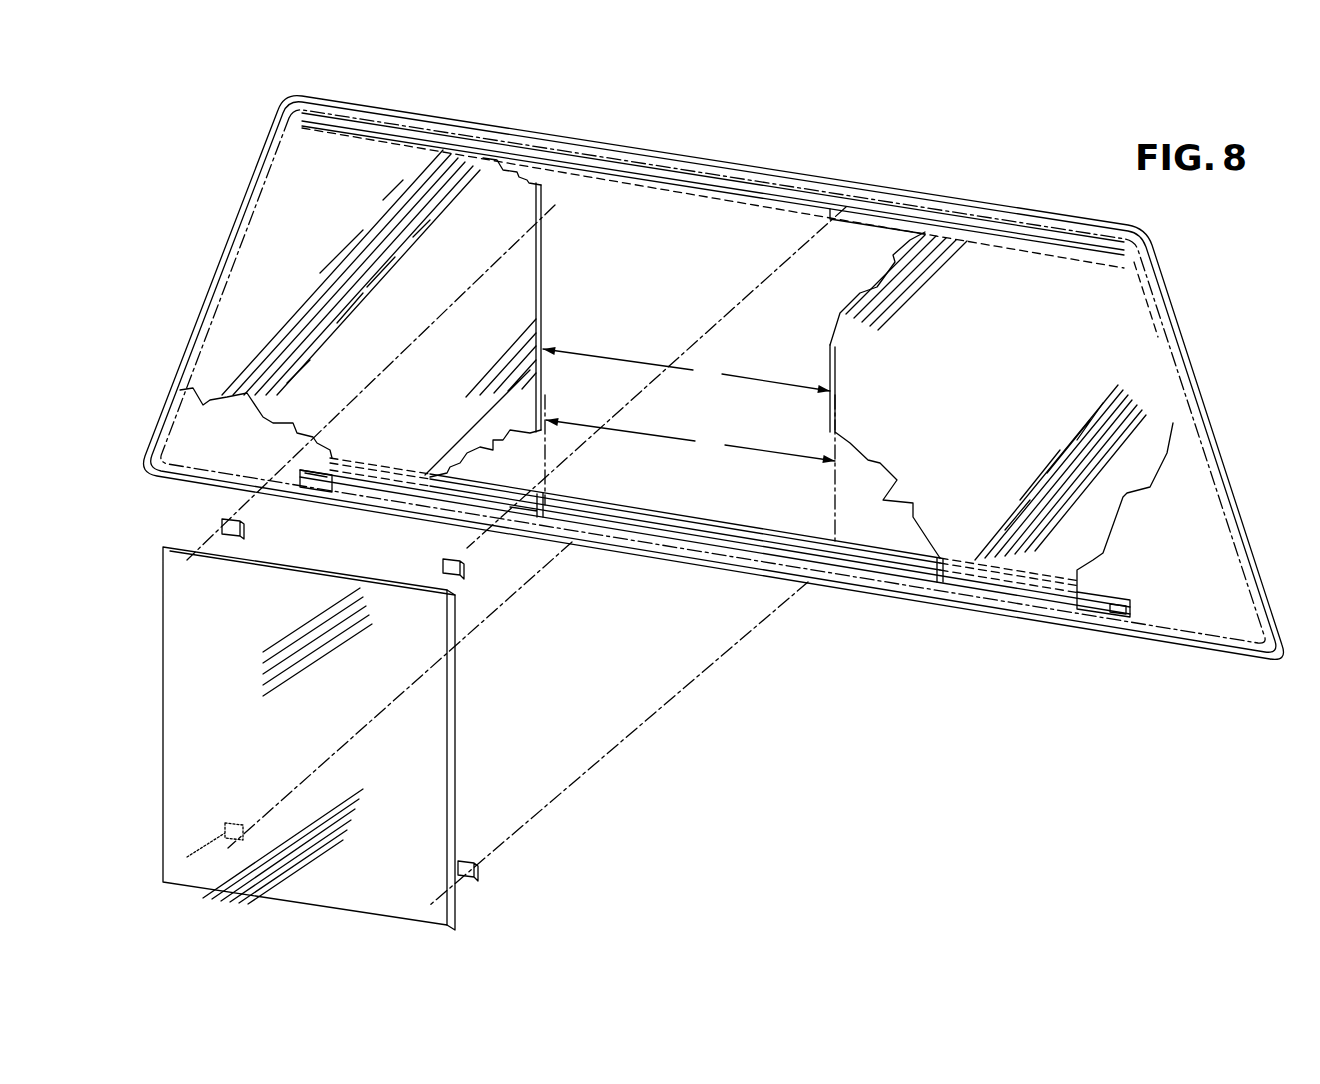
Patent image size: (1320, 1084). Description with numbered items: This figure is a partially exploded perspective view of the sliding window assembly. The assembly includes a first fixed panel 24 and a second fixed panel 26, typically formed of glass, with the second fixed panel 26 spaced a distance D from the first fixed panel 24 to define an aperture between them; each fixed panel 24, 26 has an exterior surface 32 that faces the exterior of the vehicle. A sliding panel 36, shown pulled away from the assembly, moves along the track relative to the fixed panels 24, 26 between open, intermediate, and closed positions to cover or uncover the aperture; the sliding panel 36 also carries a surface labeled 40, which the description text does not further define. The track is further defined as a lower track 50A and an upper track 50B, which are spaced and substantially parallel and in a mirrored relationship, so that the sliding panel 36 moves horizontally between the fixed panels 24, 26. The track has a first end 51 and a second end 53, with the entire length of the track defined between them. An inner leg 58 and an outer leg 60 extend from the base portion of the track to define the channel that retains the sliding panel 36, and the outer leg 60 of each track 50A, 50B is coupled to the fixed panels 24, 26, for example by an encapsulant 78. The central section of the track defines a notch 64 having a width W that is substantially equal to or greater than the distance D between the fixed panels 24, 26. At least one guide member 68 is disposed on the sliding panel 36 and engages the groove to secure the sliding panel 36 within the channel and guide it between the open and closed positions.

The first fixed panel 24 is at (290, 197).
The second fixed panel 26 is at (1107, 333).
The exterior surface 32 is at (421, 302).
The sliding panel 36 is at (430, 712).
The sliding glass panel 40 is at (290, 736).
The lower track 50A is at (602, 489).
The upper track 50B is at (652, 197).
The first end 51 is at (281, 468).
The second end 53 is at (1150, 604).
The inner leg 58 is at (770, 542).
The outer leg 60 is at (540, 165).
The notch 64 is at (745, 200).
The guide member 68 is at (222, 527).
The encapsulant 78 is at (1140, 245).